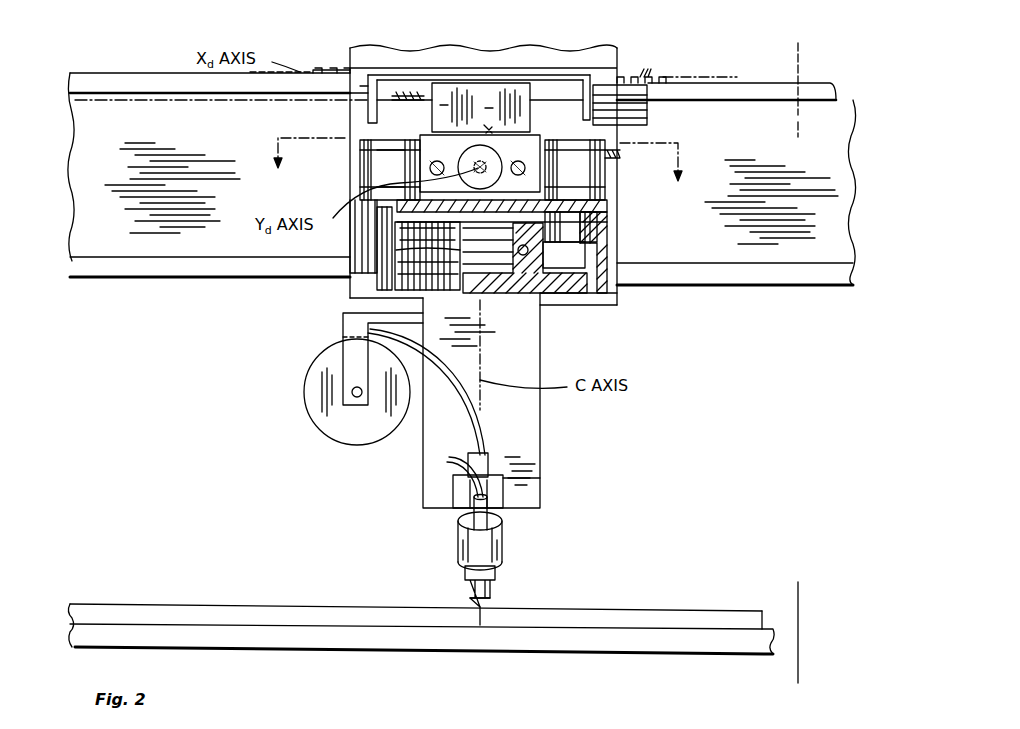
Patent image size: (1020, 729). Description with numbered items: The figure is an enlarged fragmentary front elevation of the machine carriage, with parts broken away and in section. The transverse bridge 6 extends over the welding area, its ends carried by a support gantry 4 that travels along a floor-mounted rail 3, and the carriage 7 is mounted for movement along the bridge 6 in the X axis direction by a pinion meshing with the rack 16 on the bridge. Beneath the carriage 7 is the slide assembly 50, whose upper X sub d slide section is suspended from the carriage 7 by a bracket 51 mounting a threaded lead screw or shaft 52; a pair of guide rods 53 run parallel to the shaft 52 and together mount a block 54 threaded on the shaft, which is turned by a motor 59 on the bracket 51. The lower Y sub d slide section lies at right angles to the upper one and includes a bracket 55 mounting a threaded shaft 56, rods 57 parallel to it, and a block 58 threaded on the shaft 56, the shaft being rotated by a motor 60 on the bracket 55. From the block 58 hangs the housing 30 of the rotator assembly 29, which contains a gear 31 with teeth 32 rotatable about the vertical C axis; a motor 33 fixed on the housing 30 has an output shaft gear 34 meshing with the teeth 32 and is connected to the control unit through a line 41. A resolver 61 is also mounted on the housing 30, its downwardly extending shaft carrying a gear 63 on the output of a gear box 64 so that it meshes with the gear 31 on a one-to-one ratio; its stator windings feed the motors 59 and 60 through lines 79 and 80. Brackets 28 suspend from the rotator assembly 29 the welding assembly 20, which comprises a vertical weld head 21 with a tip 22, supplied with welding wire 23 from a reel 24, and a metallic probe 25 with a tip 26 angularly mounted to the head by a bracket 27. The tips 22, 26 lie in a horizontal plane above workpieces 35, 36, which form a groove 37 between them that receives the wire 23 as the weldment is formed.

The rail 3 is at (806, 55).
The support gantry 4 is at (477, 174).
The bridge 6 is at (131, 105).
The carriage 7 is at (360, 46).
The rack 16 is at (284, 97).
The welding assembly 20 is at (598, 347).
The weld head 21 is at (503, 487).
The tip 22 is at (468, 603).
The welding wire 23 is at (448, 378).
The reel 24 is at (304, 387).
The probe 25 is at (500, 544).
The tip 26 is at (482, 607).
The bracket 27 is at (470, 492).
The bracket 28 is at (540, 328).
The rotator assembly 29 is at (330, 239).
The housing 30 is at (612, 227).
The gear 31 is at (447, 296).
The teeth 32 is at (548, 244).
The motor 33 is at (593, 173).
The output shaft gear 34 is at (597, 240).
The workpiece 35 is at (255, 604).
The workpiece 36 is at (658, 610).
The groove 37 is at (472, 598).
The line 41 is at (621, 137).
The slide assembly 50 is at (330, 108).
The bracket 51 is at (367, 88).
The threaded shaft 52 is at (406, 99).
The guide rods 53 is at (557, 98).
The block 54 is at (503, 88).
The bracket 55 is at (453, 155).
The threaded shaft 56 is at (516, 156).
The rods 57 is at (435, 162).
The block 58 is at (610, 201).
The motor 59 is at (648, 88).
The motor 60 is at (478, 147).
The resolver 61 is at (367, 162).
The gear 63 is at (340, 275).
The gear box 64 is at (365, 183).
The line 79 is at (490, 134).
The line 80 is at (638, 77).